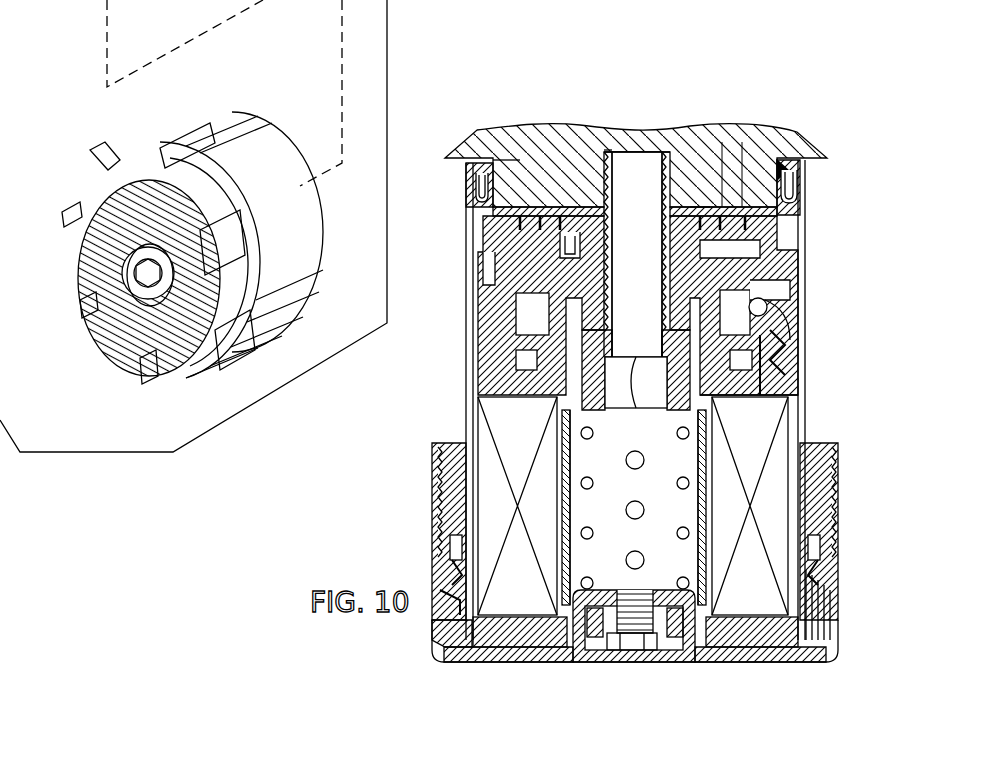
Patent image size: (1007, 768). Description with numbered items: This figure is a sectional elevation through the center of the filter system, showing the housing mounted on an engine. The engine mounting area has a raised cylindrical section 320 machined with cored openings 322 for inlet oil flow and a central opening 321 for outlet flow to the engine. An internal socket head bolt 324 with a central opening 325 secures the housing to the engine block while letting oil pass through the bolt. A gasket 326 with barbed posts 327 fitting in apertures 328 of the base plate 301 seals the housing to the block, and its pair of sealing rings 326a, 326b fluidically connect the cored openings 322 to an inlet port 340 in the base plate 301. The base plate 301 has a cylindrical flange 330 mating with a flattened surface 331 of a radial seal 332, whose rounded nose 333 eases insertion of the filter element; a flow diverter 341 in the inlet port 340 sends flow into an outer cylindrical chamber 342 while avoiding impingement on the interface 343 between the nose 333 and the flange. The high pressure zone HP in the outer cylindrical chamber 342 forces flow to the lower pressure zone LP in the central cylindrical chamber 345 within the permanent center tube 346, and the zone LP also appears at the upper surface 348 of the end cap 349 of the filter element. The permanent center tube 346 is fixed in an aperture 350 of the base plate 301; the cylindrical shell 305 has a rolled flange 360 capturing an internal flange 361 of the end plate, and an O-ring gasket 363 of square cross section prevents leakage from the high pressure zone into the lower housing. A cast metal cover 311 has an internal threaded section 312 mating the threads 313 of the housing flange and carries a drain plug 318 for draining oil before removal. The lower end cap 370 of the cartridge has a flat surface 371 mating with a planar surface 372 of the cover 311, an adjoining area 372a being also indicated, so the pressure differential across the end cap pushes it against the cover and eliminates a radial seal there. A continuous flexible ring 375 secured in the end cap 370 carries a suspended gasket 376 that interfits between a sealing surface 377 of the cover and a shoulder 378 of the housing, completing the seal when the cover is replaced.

The base plate 301 is at (805, 220).
The cylindrical shell 305 is at (466, 382).
The metal cover 311 is at (127, 150).
The internal threaded section 312 is at (440, 442).
The threads 313 is at (455, 520).
The drain plug 318 is at (143, 287).
The raised cylindrical section 320 is at (760, 165).
The central opening 321 is at (637, 152).
The cored openings 322 is at (732, 142).
The internal socket head bolt 324 is at (600, 150).
The central opening 325 is at (630, 413).
The gasket 326 is at (520, 160).
The sealing ring 326a is at (700, 205).
The sealing ring 326b is at (796, 193).
The barbed posts 327 is at (482, 258).
The apertures 328 is at (597, 236).
The cylindrical flange 330 is at (762, 298).
The flattened surface 331 is at (800, 356).
The radial seal 332 is at (783, 345).
The rounded nose 333 is at (775, 322).
The inlet port 340 is at (790, 170).
The flow diverter 341 is at (800, 252).
The outer cylindrical chamber 342 is at (797, 418).
The interface 343 is at (770, 310).
The central cylindrical chamber 345 is at (628, 590).
The permanent center tube 346 is at (690, 590).
The upper surface 348 is at (720, 355).
The end cap 349 is at (790, 396).
The aperture 350 is at (573, 317).
The rolled flange 360 is at (472, 185).
The internal flange 361 is at (470, 168).
The O-ring gasket 363 is at (485, 232).
The lower end cap 370 is at (495, 640).
The flat surface 371 is at (740, 647).
The planar surface 372 is at (540, 647).
The pocket 372a is at (634, 655).
The continuous flexible ring 375 is at (462, 615).
The suspended gasket 376 is at (815, 565).
The sealing surface 377 is at (465, 600).
The shoulder 378 is at (456, 550).
The high pressure side HP is at (800, 483).
The lower pressure zone LP is at (626, 539).